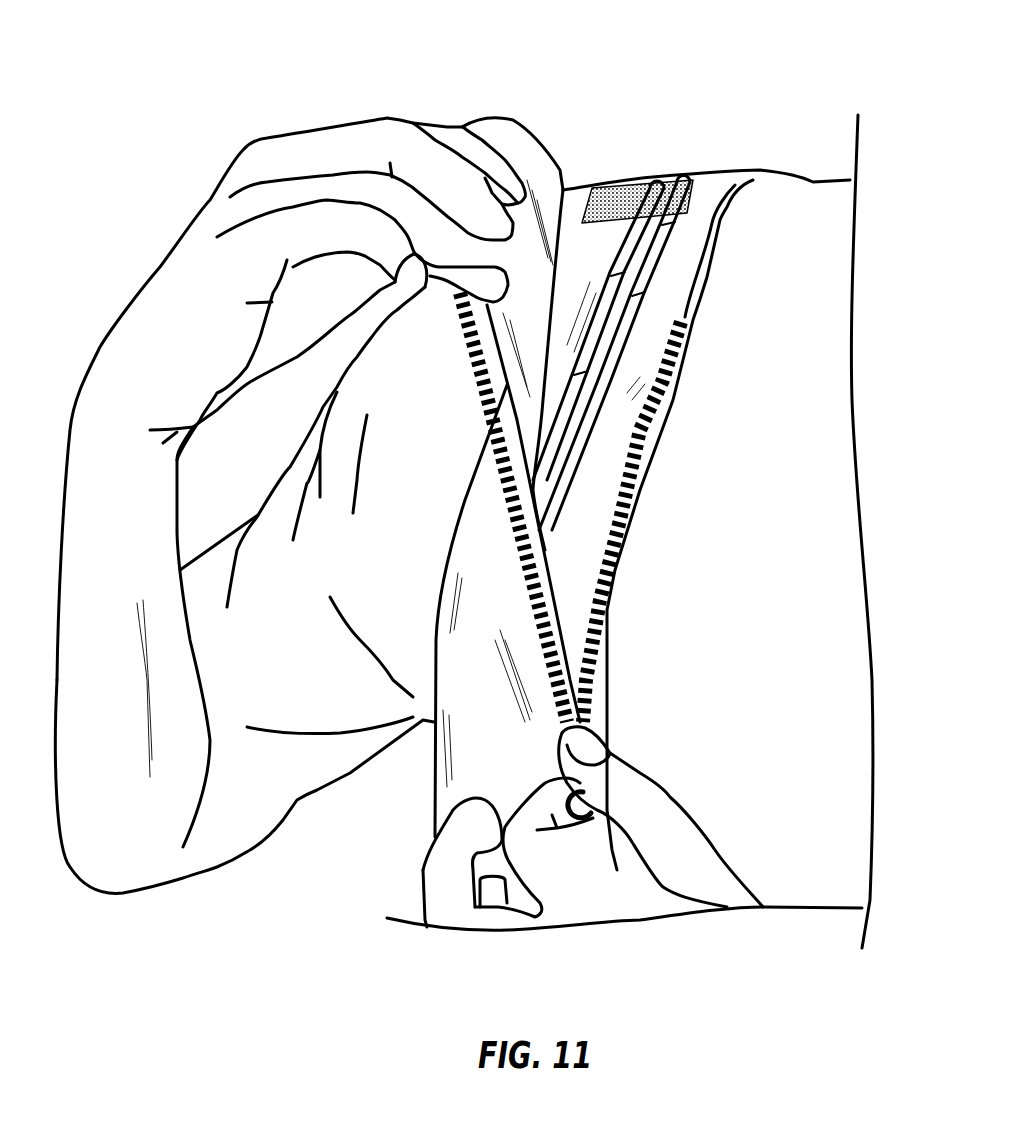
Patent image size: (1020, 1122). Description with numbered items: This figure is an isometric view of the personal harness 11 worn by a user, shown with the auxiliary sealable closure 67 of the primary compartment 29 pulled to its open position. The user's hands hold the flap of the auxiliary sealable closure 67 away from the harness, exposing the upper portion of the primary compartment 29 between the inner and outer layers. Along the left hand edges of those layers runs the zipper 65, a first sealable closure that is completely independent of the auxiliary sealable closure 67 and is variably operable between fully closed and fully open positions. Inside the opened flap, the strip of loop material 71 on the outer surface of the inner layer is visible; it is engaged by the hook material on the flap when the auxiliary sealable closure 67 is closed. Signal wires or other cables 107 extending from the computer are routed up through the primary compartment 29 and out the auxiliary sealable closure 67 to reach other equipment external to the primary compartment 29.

The personal harness 11 is at (740, 60).
The primary compartment 29 is at (625, 614).
The zipper 65 is at (650, 457).
The auxiliary sealable closure 67 is at (503, 133).
The strip of loop material 71 is at (612, 188).
The cables 107 is at (653, 247).